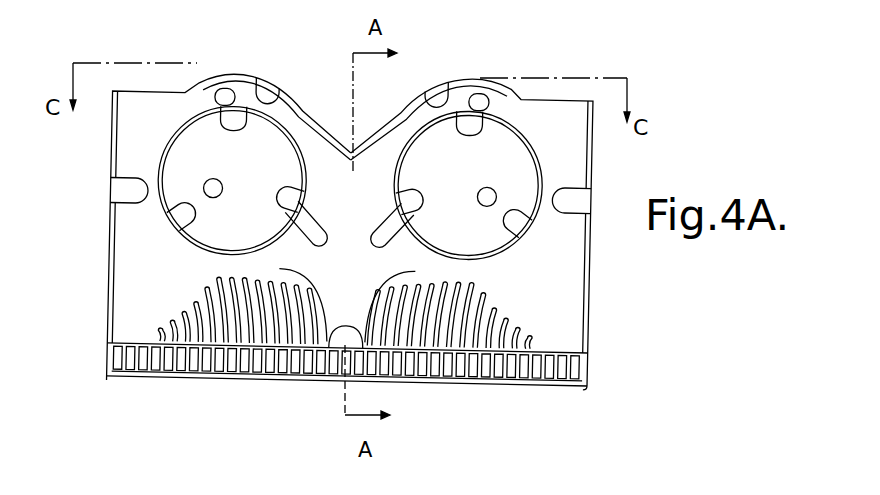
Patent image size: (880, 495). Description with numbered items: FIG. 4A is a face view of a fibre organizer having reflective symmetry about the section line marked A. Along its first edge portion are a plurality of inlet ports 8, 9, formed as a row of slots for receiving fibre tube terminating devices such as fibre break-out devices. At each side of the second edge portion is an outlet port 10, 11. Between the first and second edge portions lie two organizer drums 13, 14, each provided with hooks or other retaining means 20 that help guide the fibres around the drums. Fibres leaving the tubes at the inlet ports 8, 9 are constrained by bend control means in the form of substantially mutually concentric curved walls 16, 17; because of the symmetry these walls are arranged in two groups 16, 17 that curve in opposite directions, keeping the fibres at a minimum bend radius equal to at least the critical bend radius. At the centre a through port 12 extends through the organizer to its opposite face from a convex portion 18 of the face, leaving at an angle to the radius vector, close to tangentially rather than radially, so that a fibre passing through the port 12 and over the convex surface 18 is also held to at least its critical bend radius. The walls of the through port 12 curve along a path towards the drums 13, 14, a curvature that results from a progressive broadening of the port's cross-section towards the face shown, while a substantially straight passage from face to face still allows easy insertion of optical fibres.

The inlet port 8 is at (148, 388).
The inlet port 9 is at (532, 390).
The outlet port 10 is at (152, 92).
The outlet port 11 is at (563, 100).
The through port 12 is at (342, 337).
The organizer drum 13 is at (267, 171).
The organizer drum 14 is at (467, 177).
The curved walls 16 is at (200, 298).
The curved walls 17 is at (468, 313).
The convex portion 18 is at (357, 302).
The hooks or other retaining means 20 is at (225, 122).